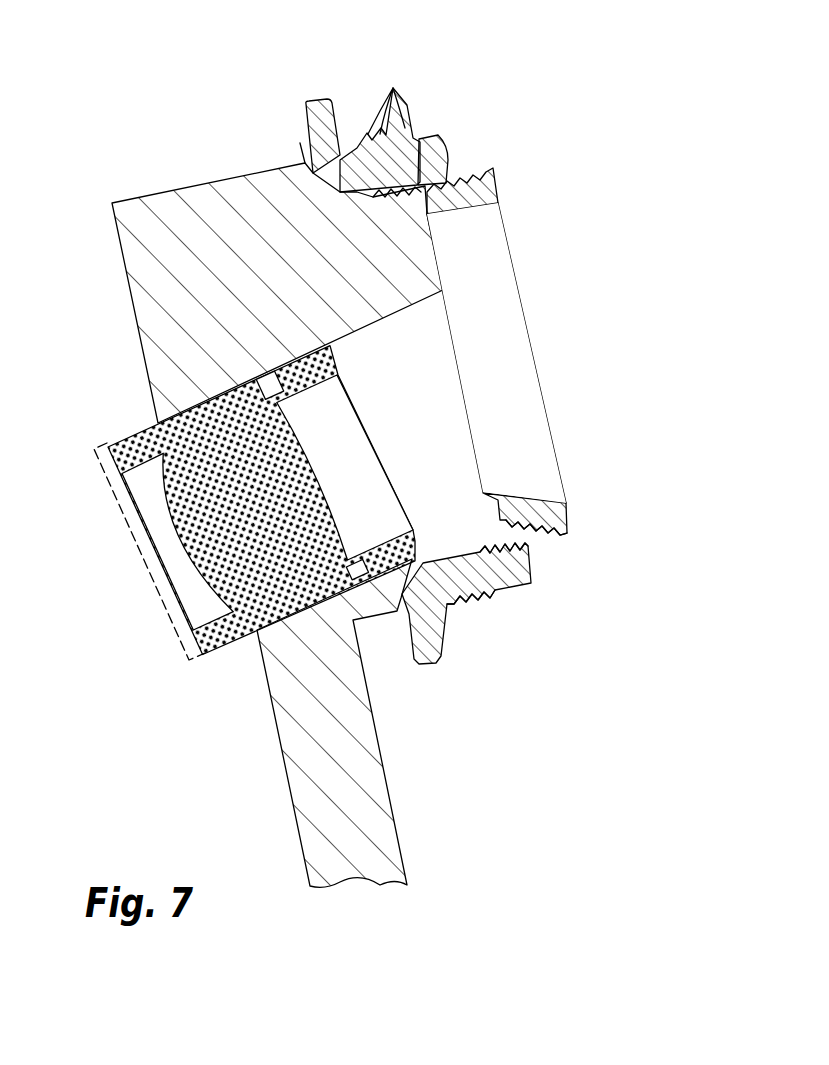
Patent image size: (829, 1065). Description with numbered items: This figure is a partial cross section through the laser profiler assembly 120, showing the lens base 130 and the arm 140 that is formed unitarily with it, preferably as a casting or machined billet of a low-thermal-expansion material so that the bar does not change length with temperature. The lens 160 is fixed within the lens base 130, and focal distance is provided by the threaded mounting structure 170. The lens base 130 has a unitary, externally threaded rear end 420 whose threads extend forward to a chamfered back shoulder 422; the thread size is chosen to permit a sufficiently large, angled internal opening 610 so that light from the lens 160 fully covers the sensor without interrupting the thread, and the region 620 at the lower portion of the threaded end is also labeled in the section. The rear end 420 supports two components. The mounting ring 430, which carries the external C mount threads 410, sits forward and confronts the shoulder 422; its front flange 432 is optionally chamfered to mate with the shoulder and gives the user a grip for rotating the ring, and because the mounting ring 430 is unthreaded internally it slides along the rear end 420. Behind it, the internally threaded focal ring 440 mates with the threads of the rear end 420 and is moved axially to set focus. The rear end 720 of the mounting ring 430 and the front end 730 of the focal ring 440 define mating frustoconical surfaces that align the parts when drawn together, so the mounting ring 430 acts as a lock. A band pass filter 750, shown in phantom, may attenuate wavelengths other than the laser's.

The laser profiler assembly 120 is at (270, 707).
The lens base 130 is at (248, 293).
The arm 140 is at (392, 831).
The lens 160 is at (212, 648).
The threaded mounting structure 170 is at (473, 617).
The external threads 410 is at (386, 99).
The threaded rear end 420 is at (492, 168).
The back shoulder 422 is at (259, 130).
The mounting ring 430 is at (380, 103).
The front flange 432 is at (310, 104).
The focal ring 440 is at (447, 150).
The internal opening 610 is at (442, 420).
The lower thread 620 is at (497, 513).
The rear end of the mounting ring 720 is at (500, 558).
The front end of the focal ring 730 is at (487, 567).
The band pass filter 750 is at (145, 566).